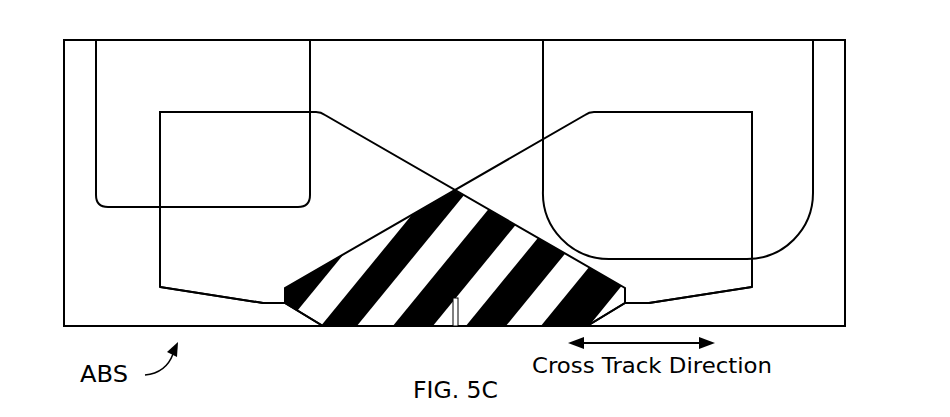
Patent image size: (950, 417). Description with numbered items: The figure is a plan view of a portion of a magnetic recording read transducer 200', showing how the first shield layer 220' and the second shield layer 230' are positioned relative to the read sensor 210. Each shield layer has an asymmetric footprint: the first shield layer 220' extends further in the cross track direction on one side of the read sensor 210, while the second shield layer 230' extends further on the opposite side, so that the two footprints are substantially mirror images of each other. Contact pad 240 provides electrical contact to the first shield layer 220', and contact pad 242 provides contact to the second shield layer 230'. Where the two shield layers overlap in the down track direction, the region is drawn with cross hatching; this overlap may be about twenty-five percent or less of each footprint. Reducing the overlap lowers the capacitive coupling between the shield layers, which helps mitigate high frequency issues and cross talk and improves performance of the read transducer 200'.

The read transducer 200' is at (454, 163).
The contact pad 242 is at (360, 183).
The contact pad 240 is at (549, 183).
The second shield layer 230' is at (237, 321).
The first shield layer 220' is at (715, 321).
The read sensor 210 is at (455, 327).